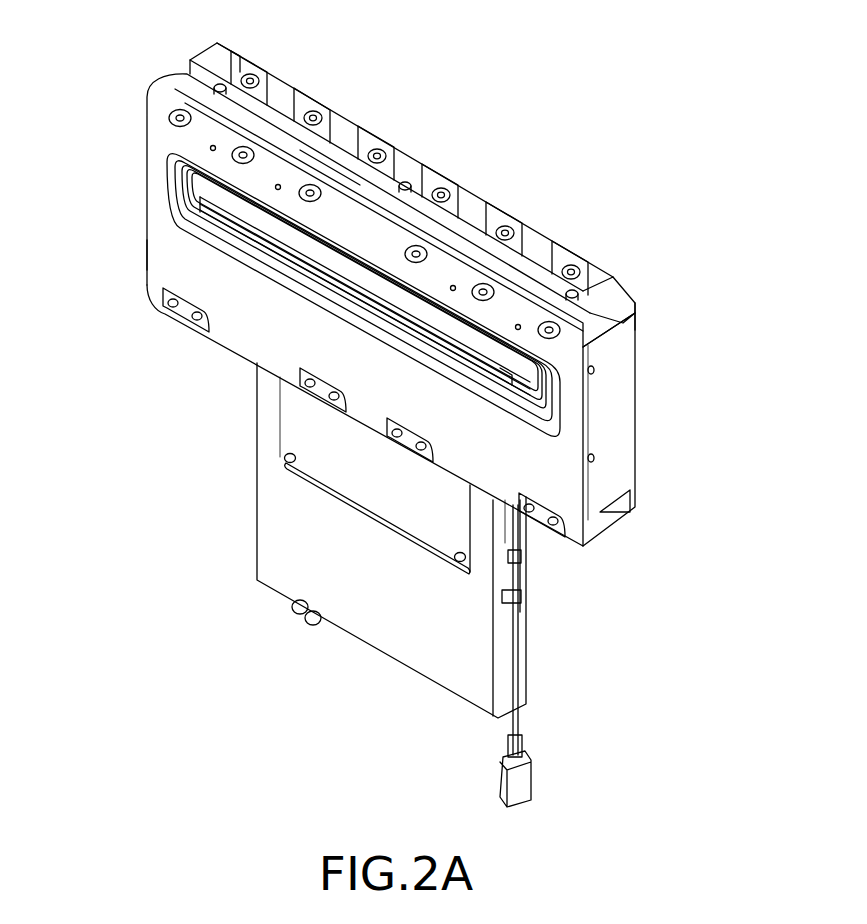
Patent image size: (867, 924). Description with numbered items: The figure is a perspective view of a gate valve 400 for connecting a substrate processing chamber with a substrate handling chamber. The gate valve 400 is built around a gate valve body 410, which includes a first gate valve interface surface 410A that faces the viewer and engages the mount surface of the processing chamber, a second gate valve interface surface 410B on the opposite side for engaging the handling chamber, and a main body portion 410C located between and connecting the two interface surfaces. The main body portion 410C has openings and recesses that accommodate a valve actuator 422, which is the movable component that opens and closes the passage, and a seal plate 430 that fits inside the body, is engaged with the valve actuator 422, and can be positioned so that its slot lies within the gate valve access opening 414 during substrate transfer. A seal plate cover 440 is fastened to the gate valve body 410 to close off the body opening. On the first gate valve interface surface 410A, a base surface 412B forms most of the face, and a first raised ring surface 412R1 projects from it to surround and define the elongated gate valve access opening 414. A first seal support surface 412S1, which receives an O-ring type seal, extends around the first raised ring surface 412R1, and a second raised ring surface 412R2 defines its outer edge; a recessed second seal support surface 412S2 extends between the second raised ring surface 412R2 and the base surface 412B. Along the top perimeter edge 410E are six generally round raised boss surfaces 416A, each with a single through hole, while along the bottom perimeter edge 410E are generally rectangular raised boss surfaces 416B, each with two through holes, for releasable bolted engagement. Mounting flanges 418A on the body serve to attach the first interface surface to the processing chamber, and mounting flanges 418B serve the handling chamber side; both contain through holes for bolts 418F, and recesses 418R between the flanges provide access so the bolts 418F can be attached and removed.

The gate valve 400 is at (617, 173).
The gate valve body 410 is at (655, 368).
The first gate valve interface surface 410A is at (190, 276).
The second gate valve interface surface 410B is at (635, 327).
The main body portion 410C is at (588, 512).
The perimeter edge 410E is at (147, 253).
The first seal support surface 412S1 is at (188, 173).
The second seal support surface 412S2 is at (512, 417).
The first raised ring surface 412R1 is at (267, 262).
The second raised ring surface 412R2 is at (538, 393).
The base surface 412B is at (263, 338).
The gate valve access opening 414 is at (493, 367).
The first set of raised boss surfaces 416A is at (167, 115).
The second set of raised boss surfaces 416B is at (320, 388).
The mounting flanges 418A is at (173, 85).
The mounting flanges 418B is at (623, 289).
The bolts 418F is at (268, 70).
The recesses 418R is at (188, 71).
The valve actuator 422 is at (540, 617).
The seal plate 430 is at (232, 220).
The seal plate cover 440 is at (333, 158).